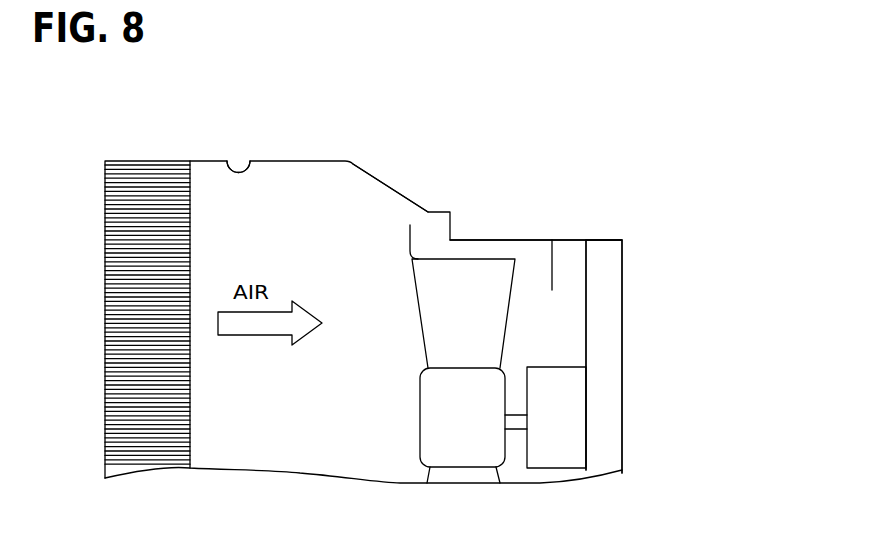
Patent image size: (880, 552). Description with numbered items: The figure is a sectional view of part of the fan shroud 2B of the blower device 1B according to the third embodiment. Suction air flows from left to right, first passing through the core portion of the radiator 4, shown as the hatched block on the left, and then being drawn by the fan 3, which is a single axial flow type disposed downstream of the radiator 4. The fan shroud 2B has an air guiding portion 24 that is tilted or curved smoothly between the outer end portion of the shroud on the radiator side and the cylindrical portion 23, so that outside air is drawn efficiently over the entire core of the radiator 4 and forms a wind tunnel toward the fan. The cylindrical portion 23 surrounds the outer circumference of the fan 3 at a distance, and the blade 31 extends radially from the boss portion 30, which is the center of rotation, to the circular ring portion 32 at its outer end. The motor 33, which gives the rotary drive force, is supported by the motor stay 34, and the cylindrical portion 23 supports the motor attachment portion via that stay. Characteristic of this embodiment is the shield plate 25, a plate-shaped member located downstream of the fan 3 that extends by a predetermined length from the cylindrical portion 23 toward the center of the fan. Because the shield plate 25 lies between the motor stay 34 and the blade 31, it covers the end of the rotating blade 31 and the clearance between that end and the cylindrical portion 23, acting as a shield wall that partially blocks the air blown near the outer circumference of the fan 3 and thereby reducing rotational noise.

The blower device 1B is at (180, 152).
The fan shroud 2B is at (350, 146).
The air guiding portion 24 is at (250, 160).
The radiator 4 is at (105, 322).
The circular ring portion 32 is at (411, 235).
The cylindrical portion 23 is at (488, 240).
The blade 31 is at (513, 286).
The shield plate 25 is at (552, 284).
The motor stay 34 is at (610, 315).
The motor 33 is at (570, 405).
The boss portion 30 is at (428, 431).
The fan 3 is at (410, 400).